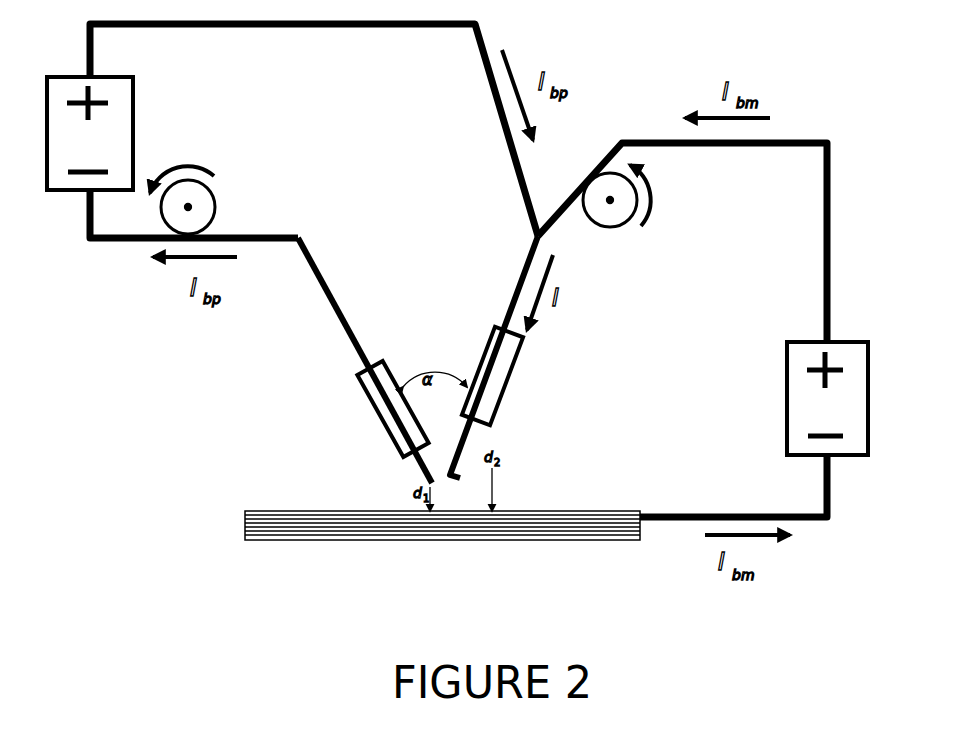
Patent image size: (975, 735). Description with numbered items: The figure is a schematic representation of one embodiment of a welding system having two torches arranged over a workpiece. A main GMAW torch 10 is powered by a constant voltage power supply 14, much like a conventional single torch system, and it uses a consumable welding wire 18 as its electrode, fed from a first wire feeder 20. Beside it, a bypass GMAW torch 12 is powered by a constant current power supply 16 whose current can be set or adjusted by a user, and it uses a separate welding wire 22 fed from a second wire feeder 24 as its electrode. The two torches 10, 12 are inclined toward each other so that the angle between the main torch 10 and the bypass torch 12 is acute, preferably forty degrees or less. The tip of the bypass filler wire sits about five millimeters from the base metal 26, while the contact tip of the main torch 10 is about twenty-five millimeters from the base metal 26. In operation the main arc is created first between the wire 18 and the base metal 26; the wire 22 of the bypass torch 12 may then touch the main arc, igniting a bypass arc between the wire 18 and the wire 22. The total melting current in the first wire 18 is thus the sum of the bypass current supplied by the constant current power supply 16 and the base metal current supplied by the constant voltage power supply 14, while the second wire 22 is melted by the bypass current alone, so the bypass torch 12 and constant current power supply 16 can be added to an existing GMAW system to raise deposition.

The main GMAW torch 10 is at (490, 372).
The bypass GMAW torch 12 is at (380, 393).
The constant voltage power supply 14 is at (855, 398).
The constant current power supply 16 is at (56, 128).
The welding wire 18 is at (525, 273).
The first wire feeder 20 is at (607, 218).
The welding wire 22 is at (335, 300).
The second wire feeder 24 is at (210, 205).
The base metal 26 is at (515, 540).